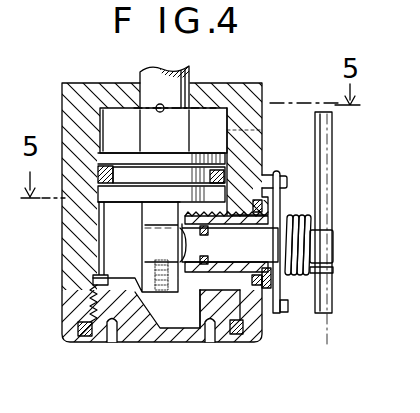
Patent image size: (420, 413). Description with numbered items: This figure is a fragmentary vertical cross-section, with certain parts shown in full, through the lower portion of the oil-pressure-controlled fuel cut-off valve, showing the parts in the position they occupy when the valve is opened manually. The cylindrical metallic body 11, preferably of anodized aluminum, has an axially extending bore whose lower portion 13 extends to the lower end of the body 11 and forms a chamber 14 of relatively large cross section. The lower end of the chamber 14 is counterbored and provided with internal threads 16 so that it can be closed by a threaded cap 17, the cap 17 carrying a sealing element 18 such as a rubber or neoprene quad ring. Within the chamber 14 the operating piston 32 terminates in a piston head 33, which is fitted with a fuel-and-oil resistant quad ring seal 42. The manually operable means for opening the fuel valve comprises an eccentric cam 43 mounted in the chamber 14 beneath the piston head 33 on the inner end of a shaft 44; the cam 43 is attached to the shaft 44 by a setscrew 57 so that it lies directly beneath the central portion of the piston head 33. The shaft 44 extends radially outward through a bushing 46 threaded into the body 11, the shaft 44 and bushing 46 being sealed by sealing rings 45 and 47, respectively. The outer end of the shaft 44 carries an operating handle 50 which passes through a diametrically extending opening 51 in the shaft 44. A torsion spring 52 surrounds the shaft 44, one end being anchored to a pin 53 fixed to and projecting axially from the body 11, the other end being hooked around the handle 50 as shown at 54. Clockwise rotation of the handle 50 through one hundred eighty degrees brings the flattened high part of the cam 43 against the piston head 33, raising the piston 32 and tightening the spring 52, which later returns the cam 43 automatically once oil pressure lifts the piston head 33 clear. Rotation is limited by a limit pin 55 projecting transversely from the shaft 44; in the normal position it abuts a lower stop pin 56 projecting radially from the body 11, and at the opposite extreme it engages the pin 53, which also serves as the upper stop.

The body 11 is at (63, 93).
The lower portion of the bore 13 is at (203, 122).
The chamber 14 is at (206, 120).
The internal threads 16 is at (88, 298).
The threaded cap 17 is at (135, 342).
The sealing element 18 is at (78, 329).
The operating piston 32 is at (150, 74).
The piston head 33 is at (113, 195).
The quad ring seal 42 is at (64, 133).
The eccentric cam 43 is at (157, 210).
The shaft 44 is at (230, 242).
The sealing ring 45 is at (210, 233).
The bushing 46 is at (210, 264).
The sealing ring 47 is at (260, 200).
The operating handle 50 is at (326, 140).
The opening 51 is at (334, 240).
The torsion spring 52 is at (299, 218).
The pin 53 is at (270, 177).
The hooked end of spring 54 is at (332, 272).
The limit pin 55 is at (280, 287).
The lower stop pin 56 is at (286, 306).
The setscrew 57 is at (143, 275).